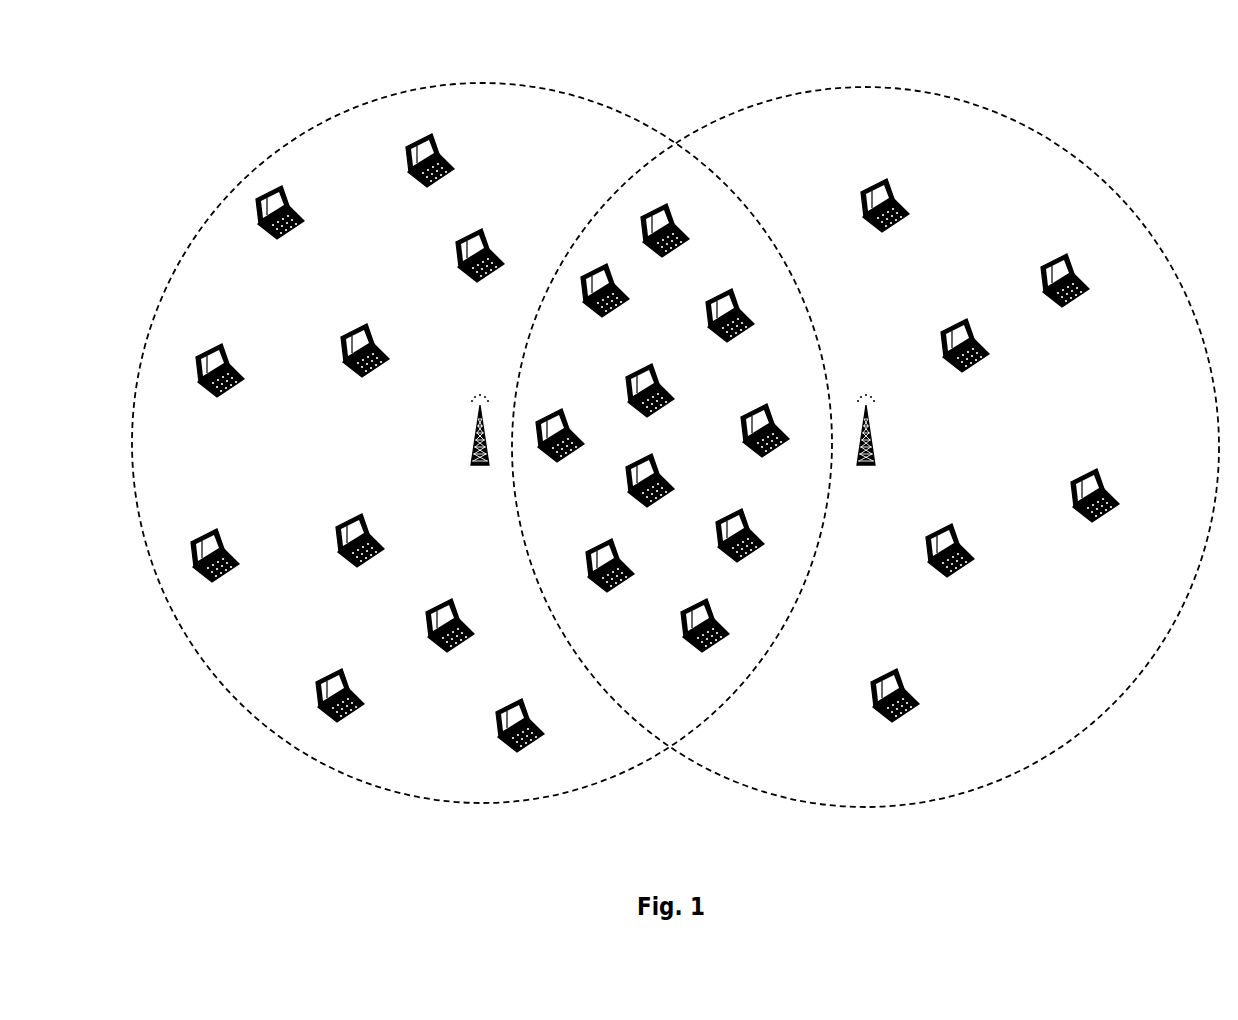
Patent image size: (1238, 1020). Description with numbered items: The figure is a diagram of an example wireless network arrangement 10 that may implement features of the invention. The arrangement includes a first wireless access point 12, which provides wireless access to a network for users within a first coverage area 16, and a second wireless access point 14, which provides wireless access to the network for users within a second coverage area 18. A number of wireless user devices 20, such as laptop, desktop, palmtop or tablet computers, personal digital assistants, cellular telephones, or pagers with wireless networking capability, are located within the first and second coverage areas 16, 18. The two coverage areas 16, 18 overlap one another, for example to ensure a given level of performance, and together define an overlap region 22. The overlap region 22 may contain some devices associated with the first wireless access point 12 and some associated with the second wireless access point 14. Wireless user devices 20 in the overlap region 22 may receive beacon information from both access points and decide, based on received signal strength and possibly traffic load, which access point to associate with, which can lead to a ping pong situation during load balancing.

The wireless network arrangement 10 is at (157, 169).
The first wireless access point 12 is at (471, 449).
The second wireless access point 14 is at (876, 451).
The first coverage area 16 is at (524, 84).
The second coverage area 18 is at (912, 88).
The wireless user devices 20 is at (418, 182).
The overlap region 22 is at (673, 534).